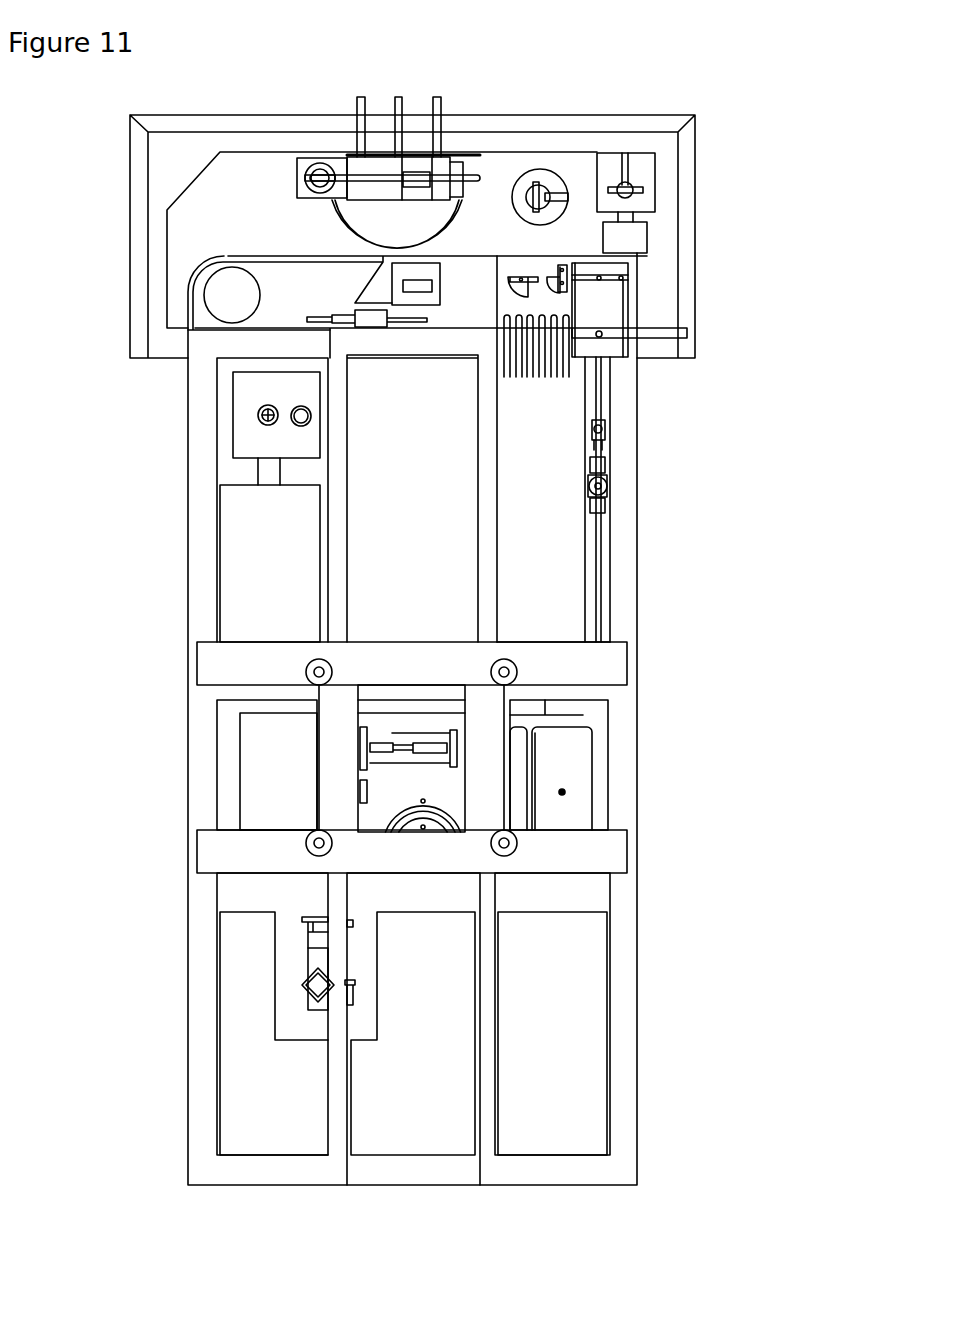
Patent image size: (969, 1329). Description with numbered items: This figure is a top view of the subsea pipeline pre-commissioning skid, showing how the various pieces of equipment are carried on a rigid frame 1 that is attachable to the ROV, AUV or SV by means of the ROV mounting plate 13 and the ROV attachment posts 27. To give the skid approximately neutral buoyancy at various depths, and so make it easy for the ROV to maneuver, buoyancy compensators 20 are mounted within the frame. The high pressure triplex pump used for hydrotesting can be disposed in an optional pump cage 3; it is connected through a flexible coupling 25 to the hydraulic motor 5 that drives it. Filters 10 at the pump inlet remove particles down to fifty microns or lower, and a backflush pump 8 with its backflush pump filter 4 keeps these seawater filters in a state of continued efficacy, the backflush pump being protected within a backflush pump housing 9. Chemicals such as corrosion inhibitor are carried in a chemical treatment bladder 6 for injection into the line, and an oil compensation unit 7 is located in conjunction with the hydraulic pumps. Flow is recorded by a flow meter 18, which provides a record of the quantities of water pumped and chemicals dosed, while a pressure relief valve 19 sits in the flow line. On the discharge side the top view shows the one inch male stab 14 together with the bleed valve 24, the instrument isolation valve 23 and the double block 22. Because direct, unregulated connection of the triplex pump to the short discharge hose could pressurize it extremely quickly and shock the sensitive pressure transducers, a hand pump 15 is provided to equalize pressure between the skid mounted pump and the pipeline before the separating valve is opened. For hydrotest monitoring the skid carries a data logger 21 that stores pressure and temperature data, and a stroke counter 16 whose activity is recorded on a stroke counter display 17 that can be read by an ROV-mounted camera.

The rigid frame 1 is at (625, 1126).
The pump cage 3 is at (262, 787).
The backflush pump filter 4 is at (232, 295).
The hydraulic motor 5 is at (318, 960).
The chemical treatment bladder 6 is at (575, 755).
The oil compensation unit 7 is at (430, 813).
The backflush pump 8 is at (268, 415).
The backflush pump housing 9 is at (243, 448).
The filter 10 is at (245, 565).
The ROV mounting plate 13 is at (222, 850).
The 1" male stab 14 is at (540, 197).
The hand pump 15 is at (628, 180).
The stroke counter 16 is at (363, 745).
The stroke counter display 17 is at (422, 275).
The flow meter 18 is at (598, 505).
The pressure relief valve 19 is at (598, 429).
The buoyancy compensator 20 is at (556, 591).
The data logger 21 is at (373, 168).
The double block 22 is at (681, 333).
The instrument isolation valve 23 is at (562, 277).
The bleed valve 24 is at (517, 277).
The flexible coupling 25 is at (317, 912).
The ROV attachment post 27 is at (305, 670).